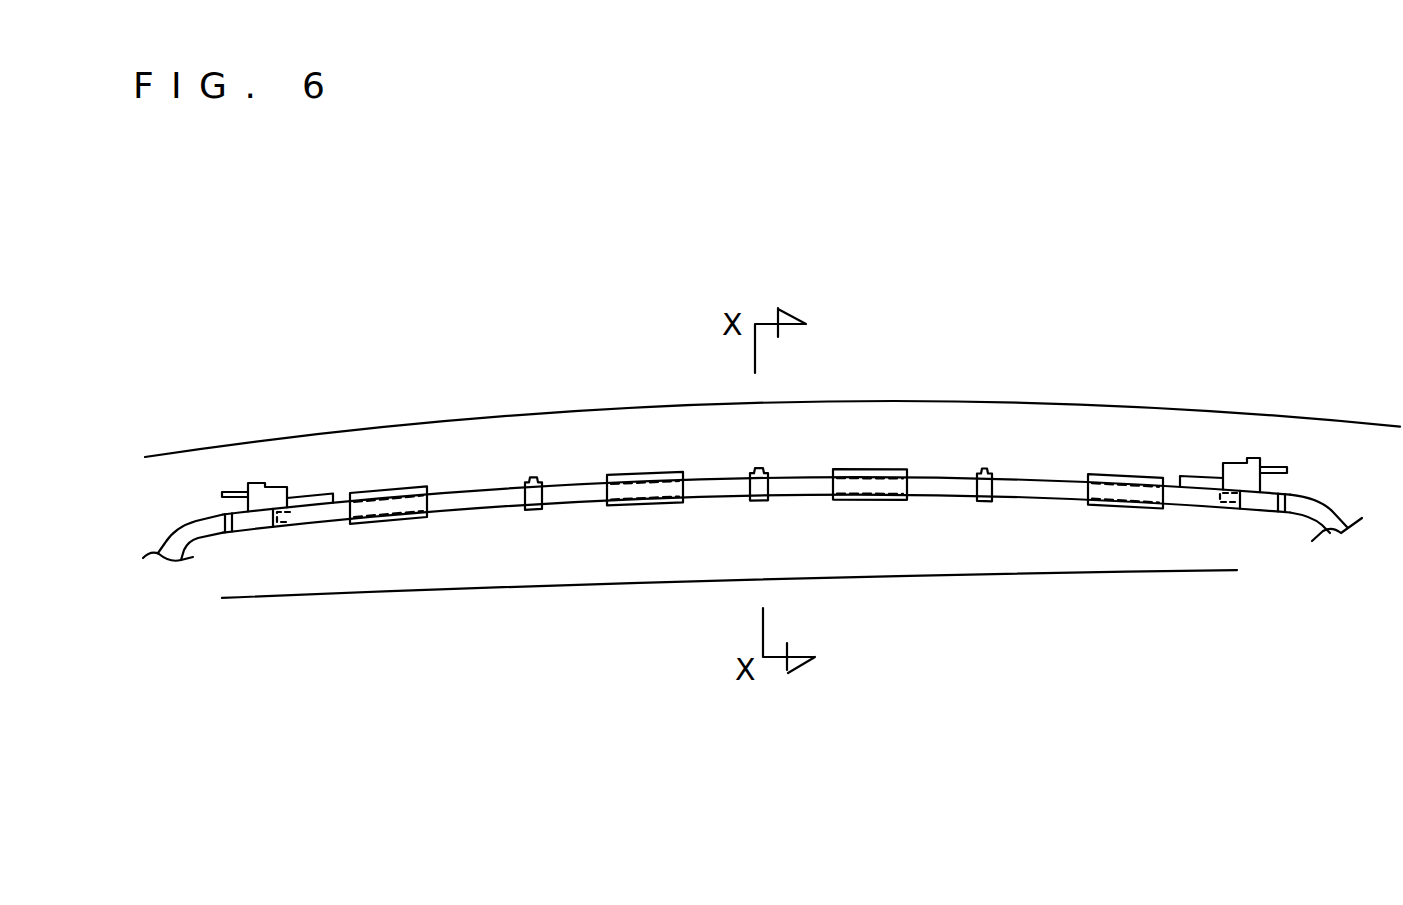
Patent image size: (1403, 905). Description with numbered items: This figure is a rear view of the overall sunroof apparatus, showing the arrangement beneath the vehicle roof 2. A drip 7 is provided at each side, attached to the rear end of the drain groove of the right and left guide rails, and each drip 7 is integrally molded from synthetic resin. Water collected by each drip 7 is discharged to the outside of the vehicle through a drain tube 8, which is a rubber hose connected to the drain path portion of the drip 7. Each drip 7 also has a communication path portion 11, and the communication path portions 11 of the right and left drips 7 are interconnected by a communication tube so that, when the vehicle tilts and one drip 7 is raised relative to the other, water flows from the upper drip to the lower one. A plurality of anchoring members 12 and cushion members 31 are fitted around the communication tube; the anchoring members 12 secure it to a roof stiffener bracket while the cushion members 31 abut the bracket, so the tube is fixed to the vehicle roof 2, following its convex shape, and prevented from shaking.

The vehicle roof 2 is at (902, 402).
The drip 7 is at (273, 483).
The drain tube 8 is at (197, 527).
The communication path portion 11 is at (283, 525).
The anchoring member 12 is at (532, 477).
The cushion member 31 is at (393, 493).